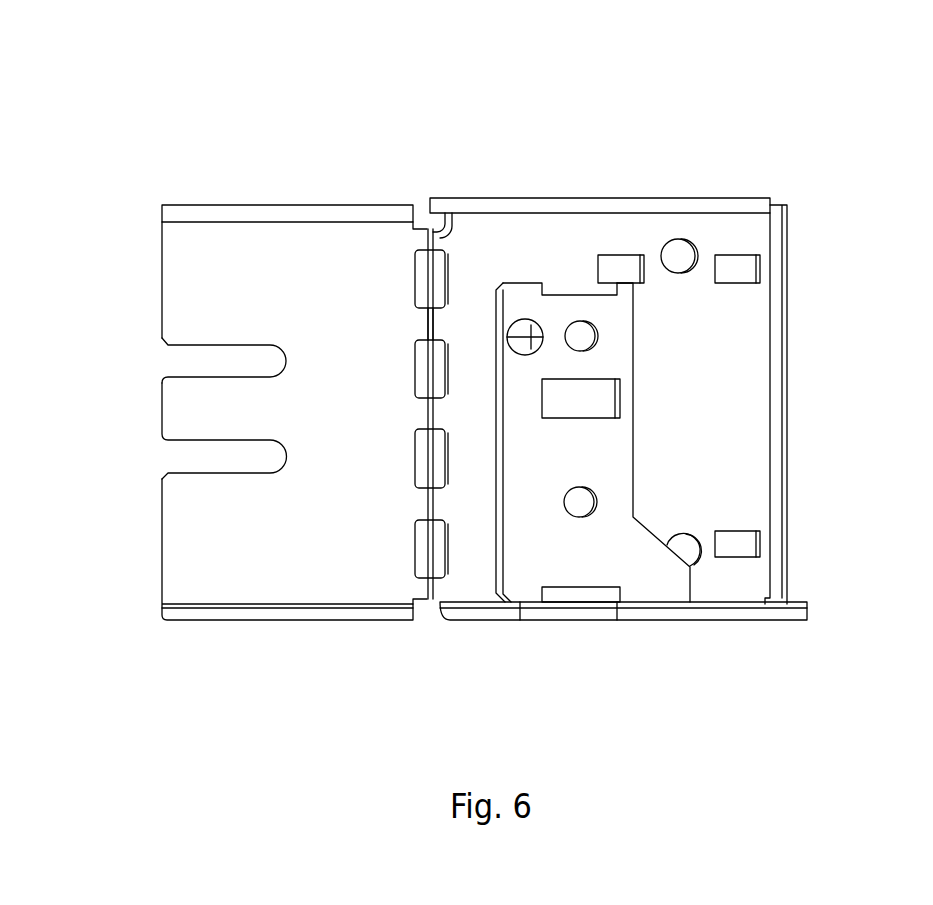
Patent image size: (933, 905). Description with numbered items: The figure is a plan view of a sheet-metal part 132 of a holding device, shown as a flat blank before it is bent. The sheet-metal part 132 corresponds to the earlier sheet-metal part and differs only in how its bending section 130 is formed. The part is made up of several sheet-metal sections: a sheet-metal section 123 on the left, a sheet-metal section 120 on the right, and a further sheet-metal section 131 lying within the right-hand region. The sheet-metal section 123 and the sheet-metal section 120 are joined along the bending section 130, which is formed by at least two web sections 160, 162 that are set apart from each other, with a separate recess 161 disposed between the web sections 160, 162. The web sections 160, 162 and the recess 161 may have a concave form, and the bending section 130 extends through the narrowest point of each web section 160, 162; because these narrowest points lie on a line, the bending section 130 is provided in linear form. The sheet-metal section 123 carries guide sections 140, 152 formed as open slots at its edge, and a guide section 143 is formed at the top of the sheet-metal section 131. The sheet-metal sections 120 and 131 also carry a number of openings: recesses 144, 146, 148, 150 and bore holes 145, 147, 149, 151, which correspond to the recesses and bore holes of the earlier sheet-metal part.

The sheet-metal section 120 is at (727, 375).
The sheet-metal section 123 is at (274, 547).
The bending section 130 is at (428, 226).
The sheet-metal section 131 is at (602, 452).
The sheet-metal part 132 is at (459, 112).
The guide section 140 is at (184, 343).
The guide section 143 is at (556, 288).
The recess 144 is at (621, 252).
The bore hole 145 is at (687, 236).
The recess 146 is at (734, 252).
The bore hole 147 is at (601, 337).
The recess 148 is at (624, 398).
The bore hole 149 is at (579, 526).
The recess 150 is at (764, 545).
The bore hole 151 is at (700, 577).
The guide section 152 is at (184, 477).
The web section 160 is at (426, 330).
The recess 161 is at (413, 265).
The web section 162 is at (440, 234).